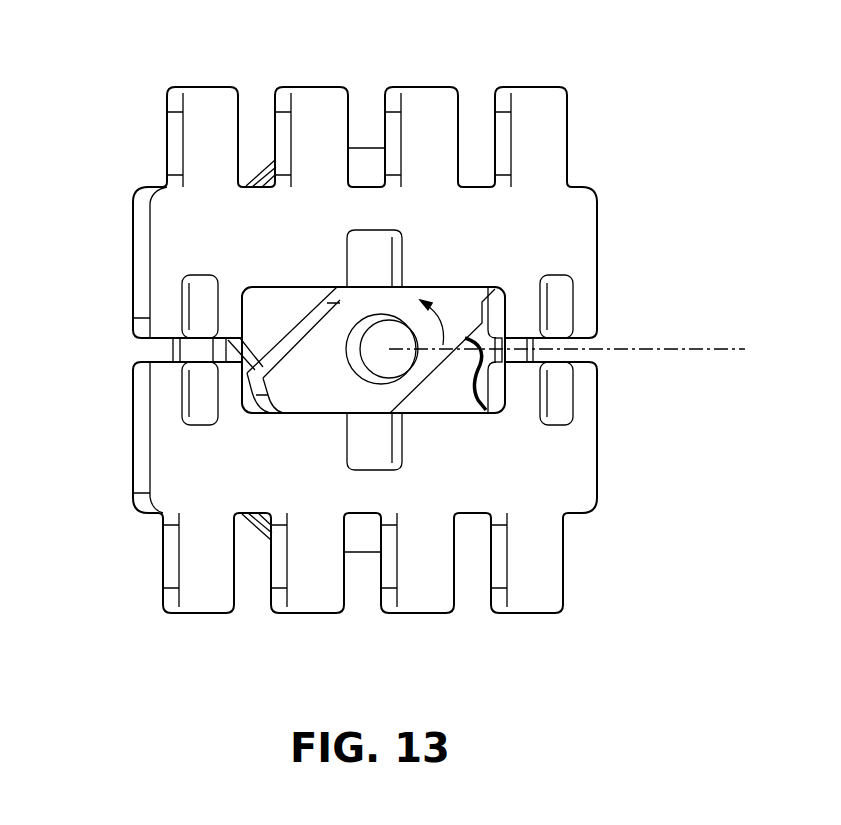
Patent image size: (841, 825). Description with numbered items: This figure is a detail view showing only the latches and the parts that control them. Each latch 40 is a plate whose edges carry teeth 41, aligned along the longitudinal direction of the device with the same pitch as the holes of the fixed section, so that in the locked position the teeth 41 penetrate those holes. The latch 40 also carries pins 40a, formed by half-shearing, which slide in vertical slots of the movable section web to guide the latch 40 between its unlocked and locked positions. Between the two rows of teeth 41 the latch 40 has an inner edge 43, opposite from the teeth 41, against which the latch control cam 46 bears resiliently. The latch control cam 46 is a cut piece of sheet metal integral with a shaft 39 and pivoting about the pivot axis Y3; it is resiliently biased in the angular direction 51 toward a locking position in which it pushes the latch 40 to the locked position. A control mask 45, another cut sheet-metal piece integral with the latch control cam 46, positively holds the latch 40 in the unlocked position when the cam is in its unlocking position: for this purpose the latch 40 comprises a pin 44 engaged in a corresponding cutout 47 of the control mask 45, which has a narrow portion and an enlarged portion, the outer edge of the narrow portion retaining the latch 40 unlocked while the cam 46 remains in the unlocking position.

The shaft 39 is at (388, 350).
The latch 40 is at (624, 455).
The pin 40a is at (617, 192).
The tooth 41 is at (205, 87).
The inner edge 43 is at (430, 320).
The pin 44 is at (377, 258).
The control mask 45 is at (367, 146).
The latch control cam 46 is at (322, 342).
The cutout 47 is at (518, 338).
The angular direction 51 is at (443, 345).
The pivot axis Y3 is at (722, 332).